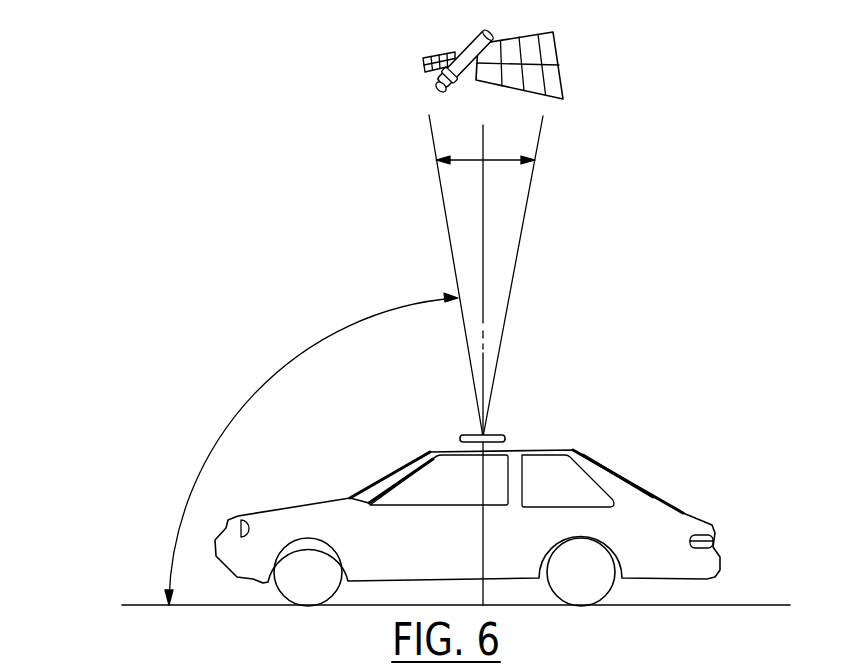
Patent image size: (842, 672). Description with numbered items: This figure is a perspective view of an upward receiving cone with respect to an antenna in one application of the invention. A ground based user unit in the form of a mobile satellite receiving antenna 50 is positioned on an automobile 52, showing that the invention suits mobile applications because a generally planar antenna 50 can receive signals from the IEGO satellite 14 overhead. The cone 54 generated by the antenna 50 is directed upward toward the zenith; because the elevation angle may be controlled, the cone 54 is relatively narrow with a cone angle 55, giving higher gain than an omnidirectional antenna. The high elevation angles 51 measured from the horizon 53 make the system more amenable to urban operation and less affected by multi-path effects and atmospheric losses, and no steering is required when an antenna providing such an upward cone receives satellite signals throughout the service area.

The IEGO satellite 14 is at (462, 53).
The mobile satellite receiving antenna 50 is at (500, 433).
The elevation angle 51 is at (297, 358).
The automobile 52 is at (570, 450).
The horizon 53 is at (145, 603).
The cone 54 is at (527, 200).
The cone angle 55 is at (482, 158).